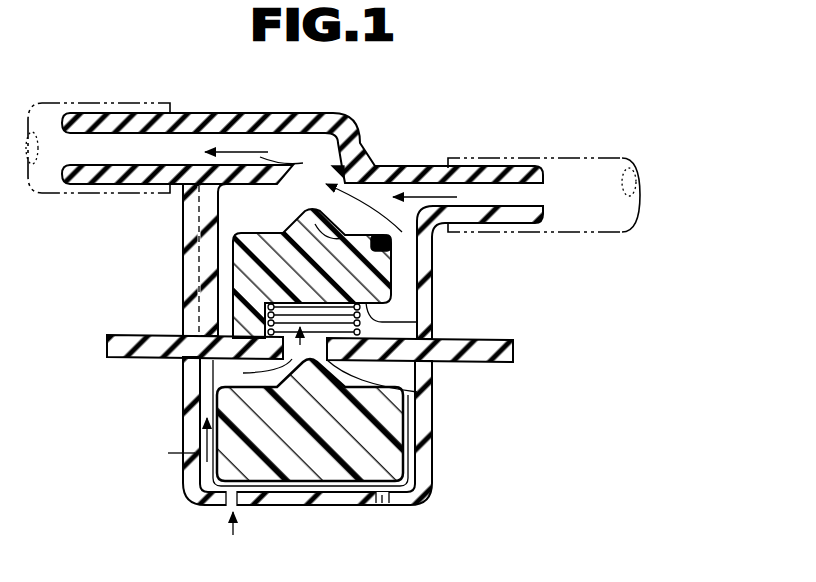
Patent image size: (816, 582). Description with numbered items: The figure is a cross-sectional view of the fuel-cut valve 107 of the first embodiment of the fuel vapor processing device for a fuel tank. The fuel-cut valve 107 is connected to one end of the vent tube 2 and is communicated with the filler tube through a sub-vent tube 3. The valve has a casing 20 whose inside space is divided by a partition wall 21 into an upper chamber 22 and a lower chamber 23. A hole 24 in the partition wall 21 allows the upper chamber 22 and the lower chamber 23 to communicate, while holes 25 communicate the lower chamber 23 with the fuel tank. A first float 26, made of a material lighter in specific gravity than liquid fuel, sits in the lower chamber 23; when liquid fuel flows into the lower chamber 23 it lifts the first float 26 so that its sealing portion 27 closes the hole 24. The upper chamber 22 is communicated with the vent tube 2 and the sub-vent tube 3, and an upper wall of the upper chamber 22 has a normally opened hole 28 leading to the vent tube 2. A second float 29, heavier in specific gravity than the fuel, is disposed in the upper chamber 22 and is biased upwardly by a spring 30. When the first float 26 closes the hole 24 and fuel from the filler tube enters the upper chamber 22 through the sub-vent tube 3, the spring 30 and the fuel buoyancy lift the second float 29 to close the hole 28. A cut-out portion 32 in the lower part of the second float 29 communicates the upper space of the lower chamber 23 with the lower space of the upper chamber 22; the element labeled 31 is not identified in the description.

The vent tube 2 is at (55, 102).
The sub-vent tube 3 is at (568, 175).
The fuel-cut valve 107 is at (356, 321).
The casing 20 is at (447, 350).
The partition wall 21 is at (233, 360).
The upper chamber 22 is at (235, 200).
The lower chamber 23 is at (400, 433).
The hole 24 is at (420, 385).
The holes 25 is at (183, 388).
The first float 26 is at (300, 465).
The sealing portion 27 is at (405, 488).
The hole 28 is at (337, 143).
The second float 29 is at (247, 268).
The spring 30 is at (262, 327).
The valve head 31 is at (350, 256).
The cut-out portion 32 is at (372, 315).